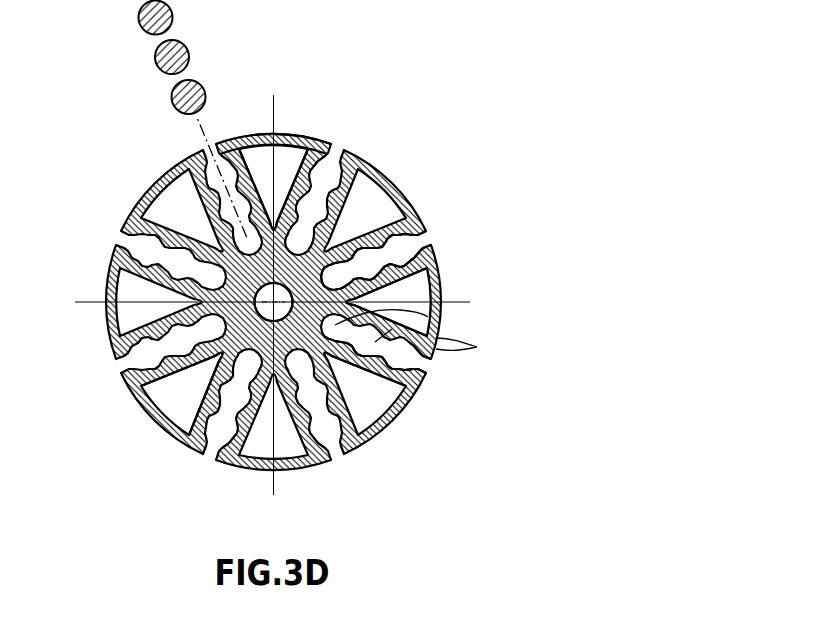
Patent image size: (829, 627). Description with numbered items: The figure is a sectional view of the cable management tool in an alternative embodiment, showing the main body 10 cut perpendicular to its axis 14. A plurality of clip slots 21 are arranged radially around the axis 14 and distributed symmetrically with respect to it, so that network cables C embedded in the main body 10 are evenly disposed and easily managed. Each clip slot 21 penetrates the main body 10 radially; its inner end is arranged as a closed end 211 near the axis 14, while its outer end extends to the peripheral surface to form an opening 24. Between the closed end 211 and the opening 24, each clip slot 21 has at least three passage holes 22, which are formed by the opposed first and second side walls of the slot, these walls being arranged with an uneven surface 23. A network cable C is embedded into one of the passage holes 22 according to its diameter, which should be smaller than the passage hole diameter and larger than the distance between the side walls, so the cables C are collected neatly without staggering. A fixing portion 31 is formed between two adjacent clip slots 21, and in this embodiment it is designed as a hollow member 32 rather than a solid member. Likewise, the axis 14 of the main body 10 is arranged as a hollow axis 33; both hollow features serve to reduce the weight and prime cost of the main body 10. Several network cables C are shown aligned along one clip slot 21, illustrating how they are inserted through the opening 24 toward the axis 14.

The main body 10 is at (415, 170).
The axis 14 is at (270, 288).
The clip slot 21 is at (395, 252).
The closed end 211 is at (373, 291).
The passage hole 22 is at (421, 334).
The uneven surface 23 is at (378, 362).
The opening 24 is at (428, 367).
The fixing portion 31 is at (298, 133).
The hollow member 32 is at (255, 152).
The hollow axis 33 is at (225, 357).
The network cable C is at (124, 19).